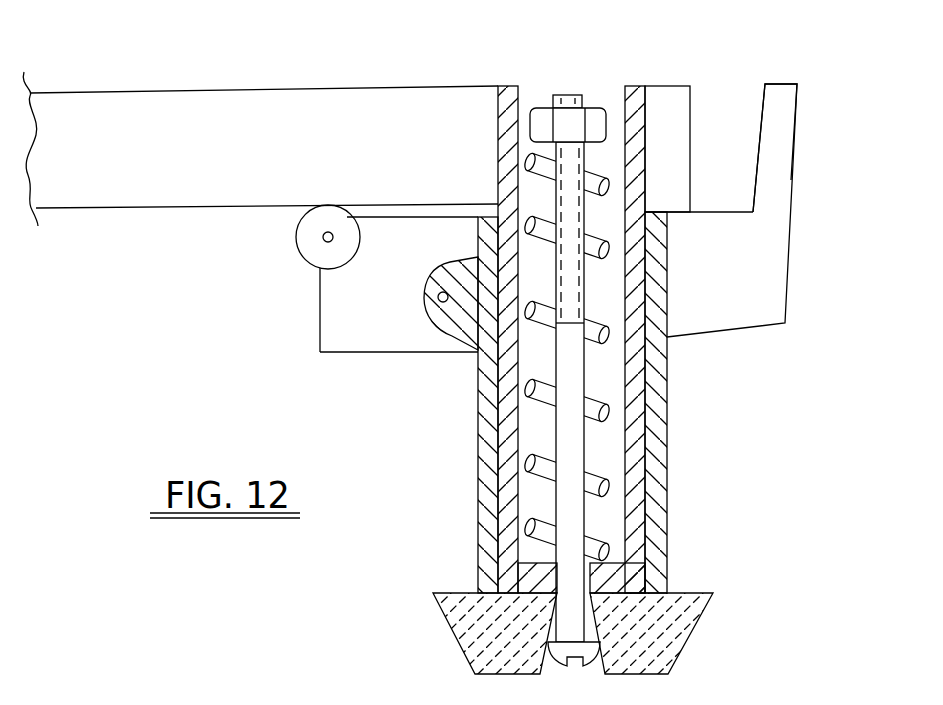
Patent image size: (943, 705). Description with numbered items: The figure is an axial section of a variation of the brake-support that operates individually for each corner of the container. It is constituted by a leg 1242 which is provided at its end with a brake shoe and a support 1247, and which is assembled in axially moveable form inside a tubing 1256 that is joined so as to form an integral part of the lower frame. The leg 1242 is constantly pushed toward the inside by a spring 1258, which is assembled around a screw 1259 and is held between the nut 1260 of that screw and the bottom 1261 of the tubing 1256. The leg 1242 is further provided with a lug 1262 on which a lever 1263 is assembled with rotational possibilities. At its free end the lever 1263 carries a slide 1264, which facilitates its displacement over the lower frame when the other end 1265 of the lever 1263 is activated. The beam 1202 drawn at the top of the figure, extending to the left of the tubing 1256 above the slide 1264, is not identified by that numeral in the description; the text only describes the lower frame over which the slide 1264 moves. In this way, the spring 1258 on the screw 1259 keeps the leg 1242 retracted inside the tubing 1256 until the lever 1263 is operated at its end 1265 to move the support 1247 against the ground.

The beam 1202 is at (333, 117).
The nut 1260 is at (575, 130).
The other end of lever 1265 is at (780, 110).
The lever 1263 is at (753, 272).
The slide 1264 is at (302, 240).
The lug 1262 is at (430, 302).
The spring 1258 is at (527, 387).
The screw 1259 is at (570, 362).
The leg 1242 is at (660, 418).
The tubing 1256 is at (633, 470).
The bottom of the tubing 1261 is at (598, 578).
The support 1247 is at (653, 620).